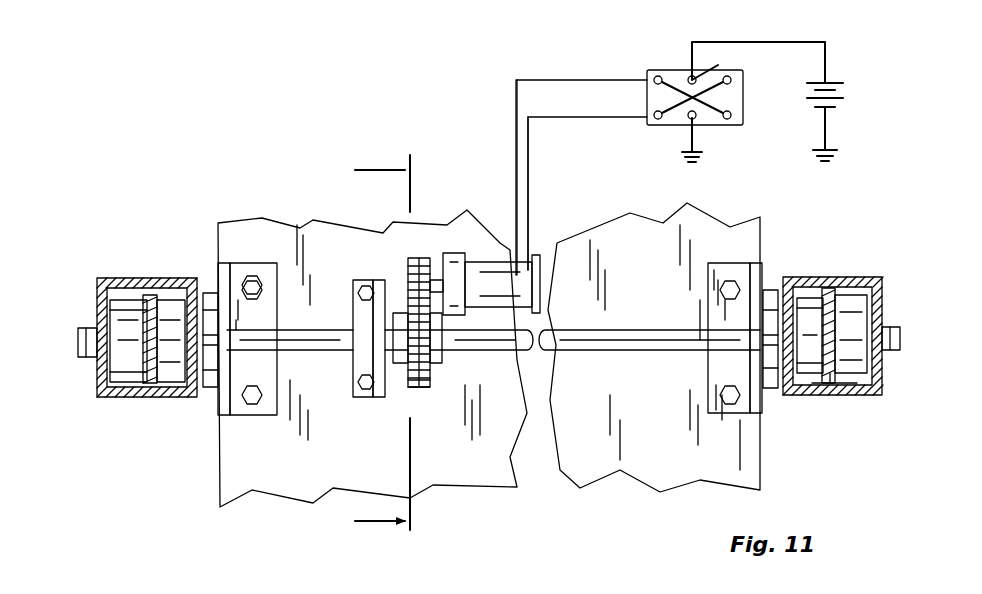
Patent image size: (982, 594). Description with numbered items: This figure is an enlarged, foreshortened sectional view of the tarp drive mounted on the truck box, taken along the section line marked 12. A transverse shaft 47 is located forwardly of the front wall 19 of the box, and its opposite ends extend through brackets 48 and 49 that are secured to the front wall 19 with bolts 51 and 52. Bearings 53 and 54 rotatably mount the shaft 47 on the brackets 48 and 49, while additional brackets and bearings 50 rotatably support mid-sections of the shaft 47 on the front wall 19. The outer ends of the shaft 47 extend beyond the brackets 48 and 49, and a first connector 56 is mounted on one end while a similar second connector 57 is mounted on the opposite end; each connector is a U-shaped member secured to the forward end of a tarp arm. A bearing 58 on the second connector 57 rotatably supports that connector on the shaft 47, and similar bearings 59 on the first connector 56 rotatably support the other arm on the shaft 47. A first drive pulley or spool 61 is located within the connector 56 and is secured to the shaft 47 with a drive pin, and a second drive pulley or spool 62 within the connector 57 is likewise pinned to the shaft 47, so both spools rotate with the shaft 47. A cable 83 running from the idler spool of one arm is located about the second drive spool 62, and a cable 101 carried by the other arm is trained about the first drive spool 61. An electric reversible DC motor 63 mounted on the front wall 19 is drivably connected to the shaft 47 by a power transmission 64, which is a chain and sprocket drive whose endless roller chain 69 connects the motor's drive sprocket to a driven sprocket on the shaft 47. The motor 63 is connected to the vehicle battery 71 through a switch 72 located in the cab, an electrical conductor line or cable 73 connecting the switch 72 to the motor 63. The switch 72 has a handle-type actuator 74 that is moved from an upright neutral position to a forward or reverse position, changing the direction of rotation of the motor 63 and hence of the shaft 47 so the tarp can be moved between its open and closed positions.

The rear drive wheels 12 is at (372, 348).
The front wall 19 is at (615, 455).
The transverse shaft 47 is at (612, 336).
The bracket 48 is at (727, 268).
The bracket 49 is at (255, 416).
The additional brackets and bearings 50 is at (358, 398).
The bolt 51 is at (728, 290).
The bolt 52 is at (252, 280).
The bearing 53 is at (770, 300).
The bearing 54 is at (210, 292).
The first connector 56 is at (888, 368).
The second connector 57 is at (110, 398).
The bearing 58 is at (95, 325).
The bearings 59 is at (890, 322).
The first drive pulley or spool 61 is at (848, 365).
The second drive pulley or spool 62 is at (130, 310).
The electric reversible DC motor 63 is at (510, 262).
The power transmission 64 is at (444, 368).
The endless roller chain 69 is at (420, 388).
The battery 71 is at (845, 83).
The switch 72 is at (672, 68).
The electrical conductor line or cable 73 is at (560, 80).
The actuator 74 is at (692, 48).
The cable 83 is at (155, 398).
The cable 101 is at (830, 390).